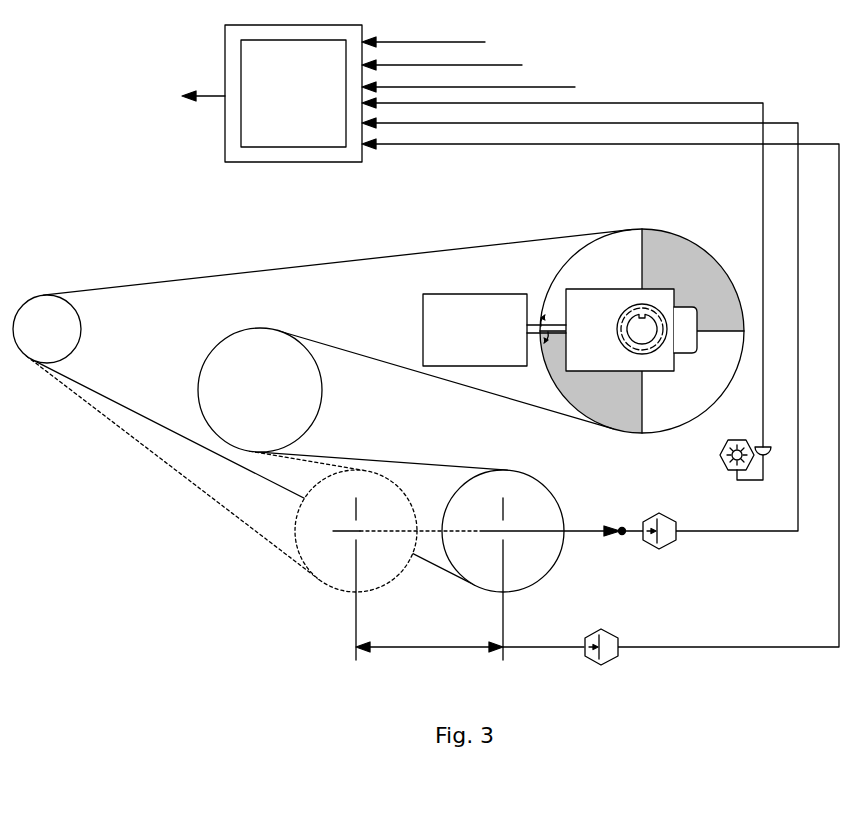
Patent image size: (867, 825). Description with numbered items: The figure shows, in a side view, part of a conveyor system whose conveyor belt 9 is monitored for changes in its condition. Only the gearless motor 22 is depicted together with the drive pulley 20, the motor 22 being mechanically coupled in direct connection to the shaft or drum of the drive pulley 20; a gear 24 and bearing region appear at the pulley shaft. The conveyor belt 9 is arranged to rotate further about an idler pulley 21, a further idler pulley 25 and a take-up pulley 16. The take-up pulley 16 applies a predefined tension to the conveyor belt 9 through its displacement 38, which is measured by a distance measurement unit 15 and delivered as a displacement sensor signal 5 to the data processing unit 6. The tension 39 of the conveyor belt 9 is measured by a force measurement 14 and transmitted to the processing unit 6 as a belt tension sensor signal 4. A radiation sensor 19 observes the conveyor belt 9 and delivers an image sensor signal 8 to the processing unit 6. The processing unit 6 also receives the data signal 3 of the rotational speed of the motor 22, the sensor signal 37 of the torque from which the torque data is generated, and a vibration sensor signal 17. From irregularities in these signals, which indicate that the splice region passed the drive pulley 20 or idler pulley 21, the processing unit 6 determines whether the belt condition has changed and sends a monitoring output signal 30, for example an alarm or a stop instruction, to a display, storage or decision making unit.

The data signal of rotational speed 3 is at (439, 42).
The sensor signal of torque 37 is at (462, 65).
The vibration sensor signal 17 is at (487, 87).
The image sensor signal 8 is at (562, 264).
The belt tension sensor signal 4 is at (580, 312).
The displacement sensor signal 5 is at (600, 384).
The monitoring output signal 30 is at (203, 83).
The data processing unit 6 is at (300, 106).
The conveyor belt 9 is at (328, 390).
The idler pulley 21 is at (60, 341).
The further idler pulley 25 is at (270, 402).
The drive pulley 20 is at (686, 280).
The gearless motor 22 is at (488, 342).
The gear 24 is at (605, 341).
The radiation sensor 19 is at (736, 465).
The force measurement 14 is at (669, 525).
The distance measurement unit 15 is at (610, 638).
The tension 39 is at (561, 521).
The take-up pulley 16 is at (413, 565).
The displacement 38 is at (470, 637).